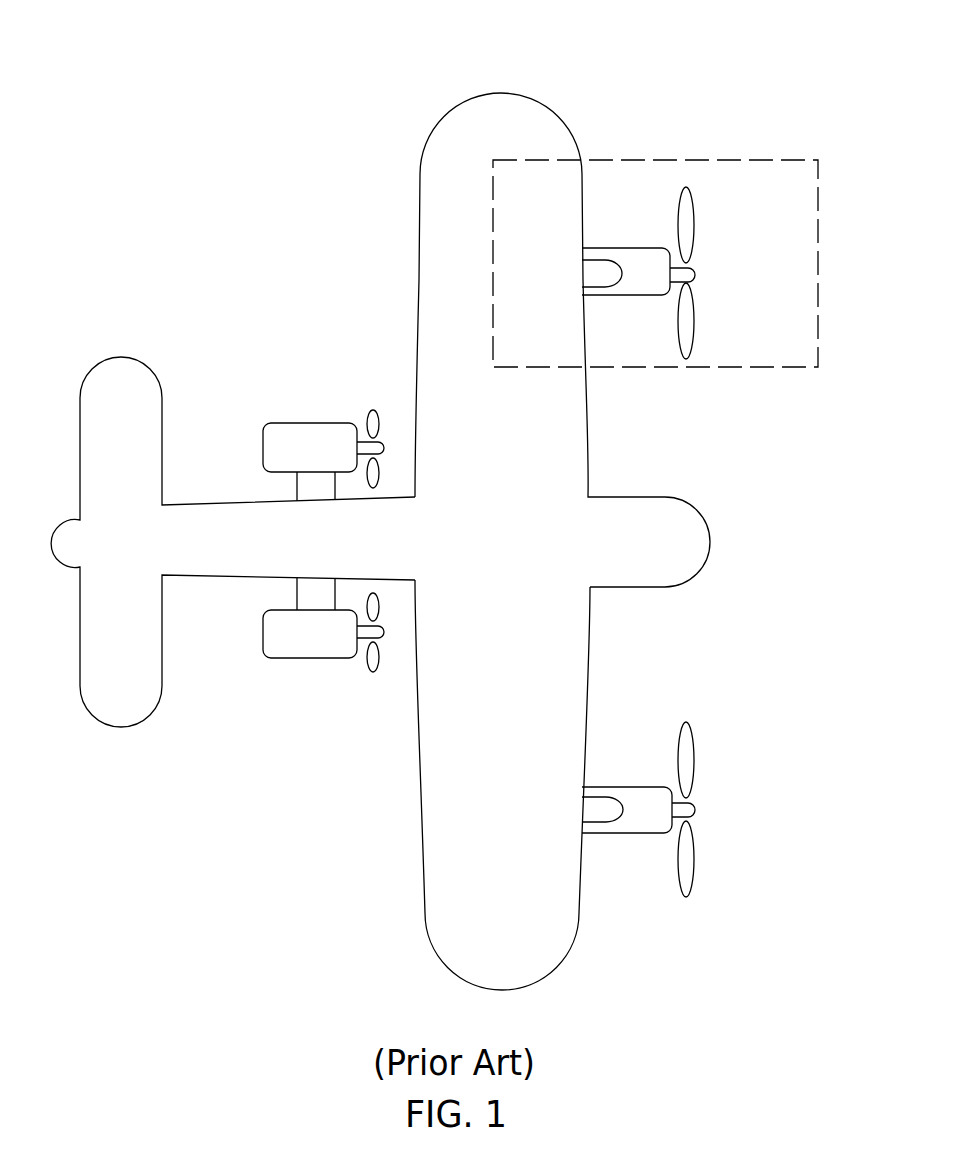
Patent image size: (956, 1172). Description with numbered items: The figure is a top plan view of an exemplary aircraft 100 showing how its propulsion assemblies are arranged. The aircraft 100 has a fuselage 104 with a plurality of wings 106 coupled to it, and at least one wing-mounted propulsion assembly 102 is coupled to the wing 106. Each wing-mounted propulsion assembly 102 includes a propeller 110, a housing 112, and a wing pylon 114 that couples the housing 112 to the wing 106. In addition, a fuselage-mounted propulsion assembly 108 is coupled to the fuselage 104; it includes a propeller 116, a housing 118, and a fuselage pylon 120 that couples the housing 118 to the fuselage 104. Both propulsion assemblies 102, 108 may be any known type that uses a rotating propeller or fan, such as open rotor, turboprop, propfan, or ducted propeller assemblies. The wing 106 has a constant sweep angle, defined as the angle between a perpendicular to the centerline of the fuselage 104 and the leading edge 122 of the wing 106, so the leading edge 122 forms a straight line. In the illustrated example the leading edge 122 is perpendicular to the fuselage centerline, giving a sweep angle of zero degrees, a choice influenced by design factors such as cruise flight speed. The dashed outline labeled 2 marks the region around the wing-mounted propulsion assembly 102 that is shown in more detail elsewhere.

The aircraft 100 is at (350, 78).
The propulsion assembly 102 is at (621, 238).
The fuselage 104 is at (222, 560).
The wing 106 is at (511, 117).
The propulsion assembly 108 is at (281, 348).
The propeller 110 is at (692, 220).
The housing 112 is at (650, 283).
The wing pylon 114 is at (607, 290).
The propeller 116 is at (374, 410).
The housing 118 is at (315, 423).
The fuselage pylon 120 is at (297, 481).
The leading edge 122 is at (590, 672).
The detail region shown in FIG. 2 is at (779, 158).